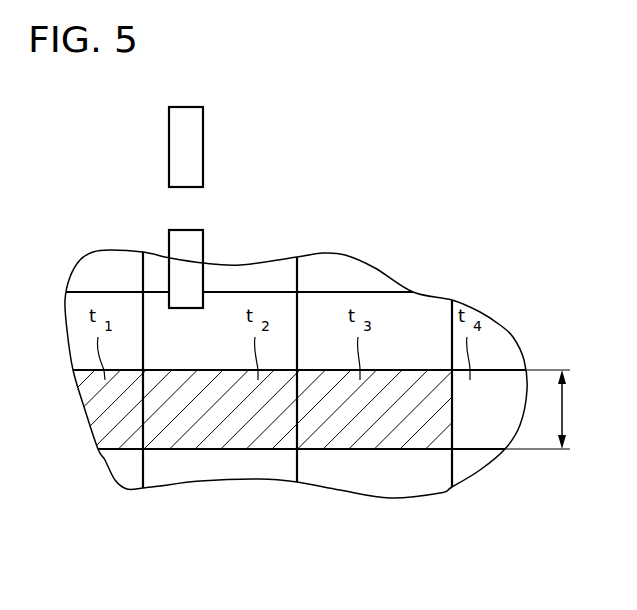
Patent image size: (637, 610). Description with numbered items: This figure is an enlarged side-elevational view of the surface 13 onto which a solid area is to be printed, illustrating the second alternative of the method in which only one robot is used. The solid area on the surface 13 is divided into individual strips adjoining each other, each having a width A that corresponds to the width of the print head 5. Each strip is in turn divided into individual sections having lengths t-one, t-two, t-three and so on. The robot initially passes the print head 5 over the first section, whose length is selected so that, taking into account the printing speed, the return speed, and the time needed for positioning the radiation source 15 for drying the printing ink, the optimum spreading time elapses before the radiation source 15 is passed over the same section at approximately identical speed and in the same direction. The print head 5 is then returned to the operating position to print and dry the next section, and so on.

The surface 13 is at (178, 465).
The radiation source 15 is at (185, 135).
The print head 5 is at (178, 237).
The width of strip A is at (549, 409).